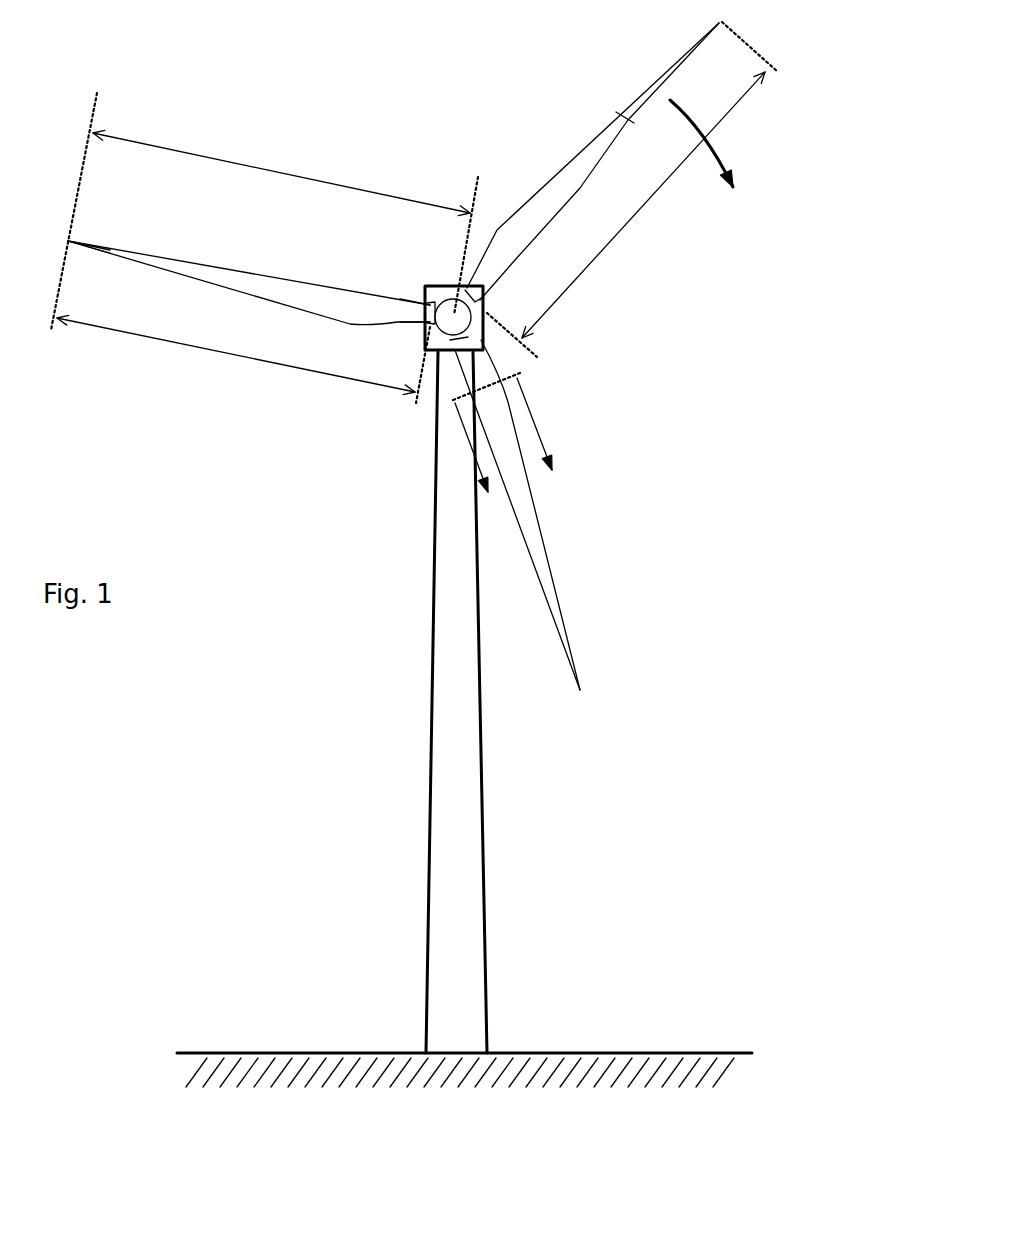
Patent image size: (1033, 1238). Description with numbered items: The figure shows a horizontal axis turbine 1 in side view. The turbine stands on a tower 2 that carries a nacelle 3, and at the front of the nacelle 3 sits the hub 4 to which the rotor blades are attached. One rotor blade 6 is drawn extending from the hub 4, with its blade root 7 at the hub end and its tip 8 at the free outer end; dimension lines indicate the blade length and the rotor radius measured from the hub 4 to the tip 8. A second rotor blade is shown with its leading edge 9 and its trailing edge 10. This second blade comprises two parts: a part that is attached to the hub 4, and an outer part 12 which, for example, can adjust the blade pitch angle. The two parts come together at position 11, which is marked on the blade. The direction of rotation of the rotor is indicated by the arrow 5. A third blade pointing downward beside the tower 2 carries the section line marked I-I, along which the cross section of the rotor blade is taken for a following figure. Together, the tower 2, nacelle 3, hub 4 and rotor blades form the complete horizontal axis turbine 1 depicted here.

The horizontal axis turbine 1 is at (650, 368).
The tower 2 is at (467, 797).
The nacelle 3 is at (438, 286).
The hub 4 is at (466, 325).
The direction of rotation 5 is at (729, 168).
The rotor blade 6 is at (248, 274).
The blade root 7 is at (428, 305).
The tip 8 is at (70, 239).
The leading edge 9 is at (575, 192).
The trailing edge 10 is at (547, 183).
The position where blade parts come together 11 is at (618, 112).
The blade part 12 is at (657, 87).